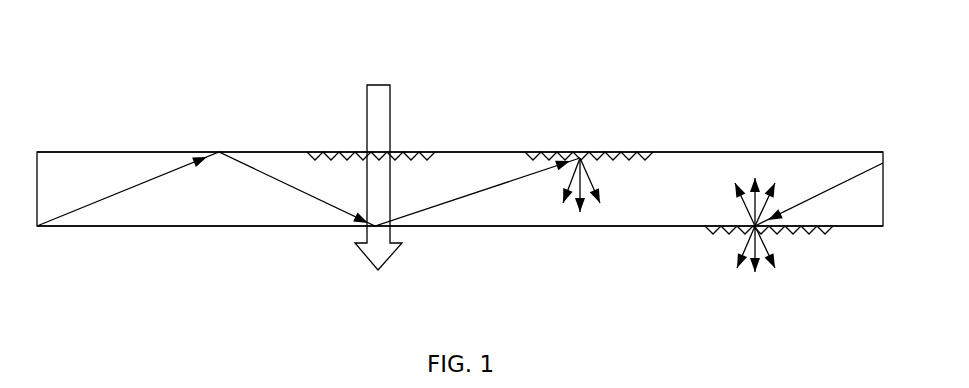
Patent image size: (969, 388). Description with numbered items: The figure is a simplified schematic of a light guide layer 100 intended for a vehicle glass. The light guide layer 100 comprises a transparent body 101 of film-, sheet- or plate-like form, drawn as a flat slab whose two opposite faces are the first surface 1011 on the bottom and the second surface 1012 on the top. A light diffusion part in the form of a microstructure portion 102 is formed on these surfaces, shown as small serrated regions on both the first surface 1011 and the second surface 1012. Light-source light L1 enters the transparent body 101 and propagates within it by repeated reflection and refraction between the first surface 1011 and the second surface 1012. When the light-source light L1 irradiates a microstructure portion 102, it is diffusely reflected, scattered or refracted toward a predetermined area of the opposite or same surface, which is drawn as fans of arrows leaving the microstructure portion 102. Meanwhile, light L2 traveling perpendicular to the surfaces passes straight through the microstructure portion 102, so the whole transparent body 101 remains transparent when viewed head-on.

The light guide layer 100 is at (636, 52).
The transparent body 101 is at (770, 168).
The first surface 1011 is at (237, 226).
The second surface 1012 is at (857, 152).
The microstructure portion 102 is at (316, 156).
The light-source light L1 is at (181, 167).
The light propagating perpendicular to the surface L2 is at (376, 110).